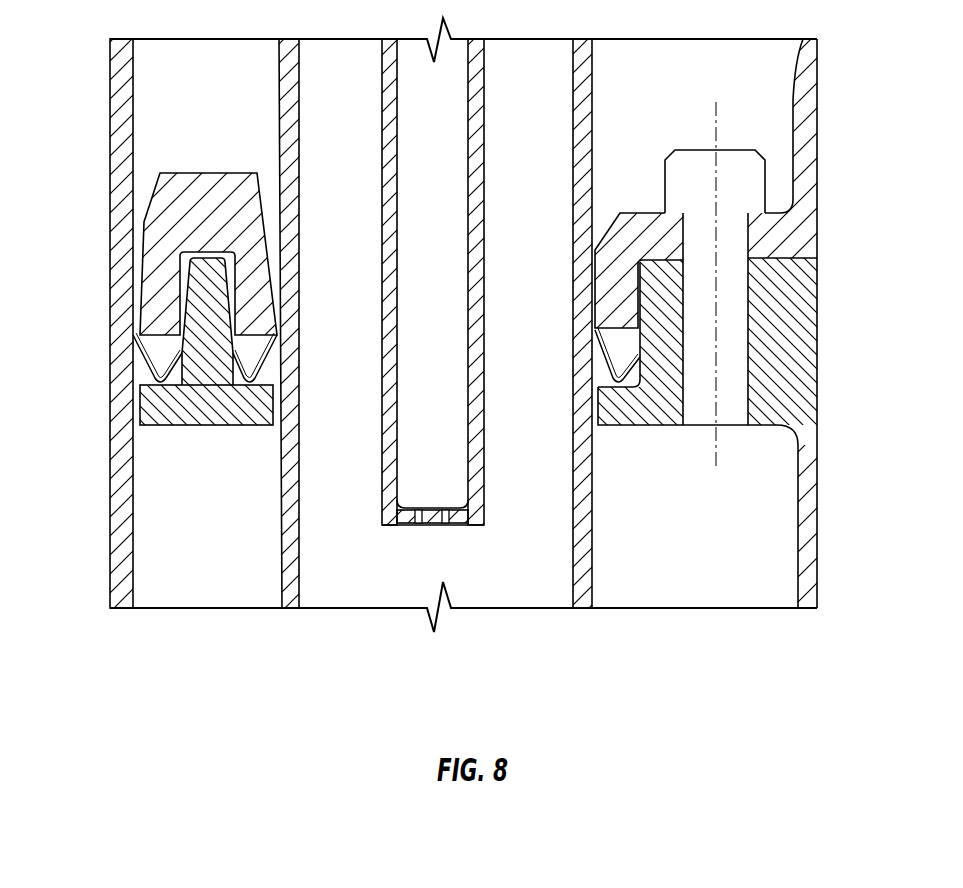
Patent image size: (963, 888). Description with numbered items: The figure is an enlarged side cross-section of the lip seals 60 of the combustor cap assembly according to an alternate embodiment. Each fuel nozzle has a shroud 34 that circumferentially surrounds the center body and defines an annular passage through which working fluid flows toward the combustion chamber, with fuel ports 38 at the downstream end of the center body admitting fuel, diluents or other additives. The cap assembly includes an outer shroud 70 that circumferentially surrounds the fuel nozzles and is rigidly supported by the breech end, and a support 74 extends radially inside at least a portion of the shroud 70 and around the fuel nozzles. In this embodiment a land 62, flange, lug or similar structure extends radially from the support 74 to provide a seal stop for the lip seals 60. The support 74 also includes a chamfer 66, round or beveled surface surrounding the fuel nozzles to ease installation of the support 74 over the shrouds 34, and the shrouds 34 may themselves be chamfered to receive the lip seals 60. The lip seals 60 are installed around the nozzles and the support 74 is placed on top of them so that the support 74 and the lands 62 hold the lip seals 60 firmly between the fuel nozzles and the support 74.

The shroud 34 is at (110, 200).
The fuel ports 38 is at (447, 522).
The lip seals 60 is at (158, 382).
The land 62 is at (257, 173).
The chamfer 66 is at (188, 262).
The shroud 70 is at (820, 199).
The support 74 is at (207, 425).